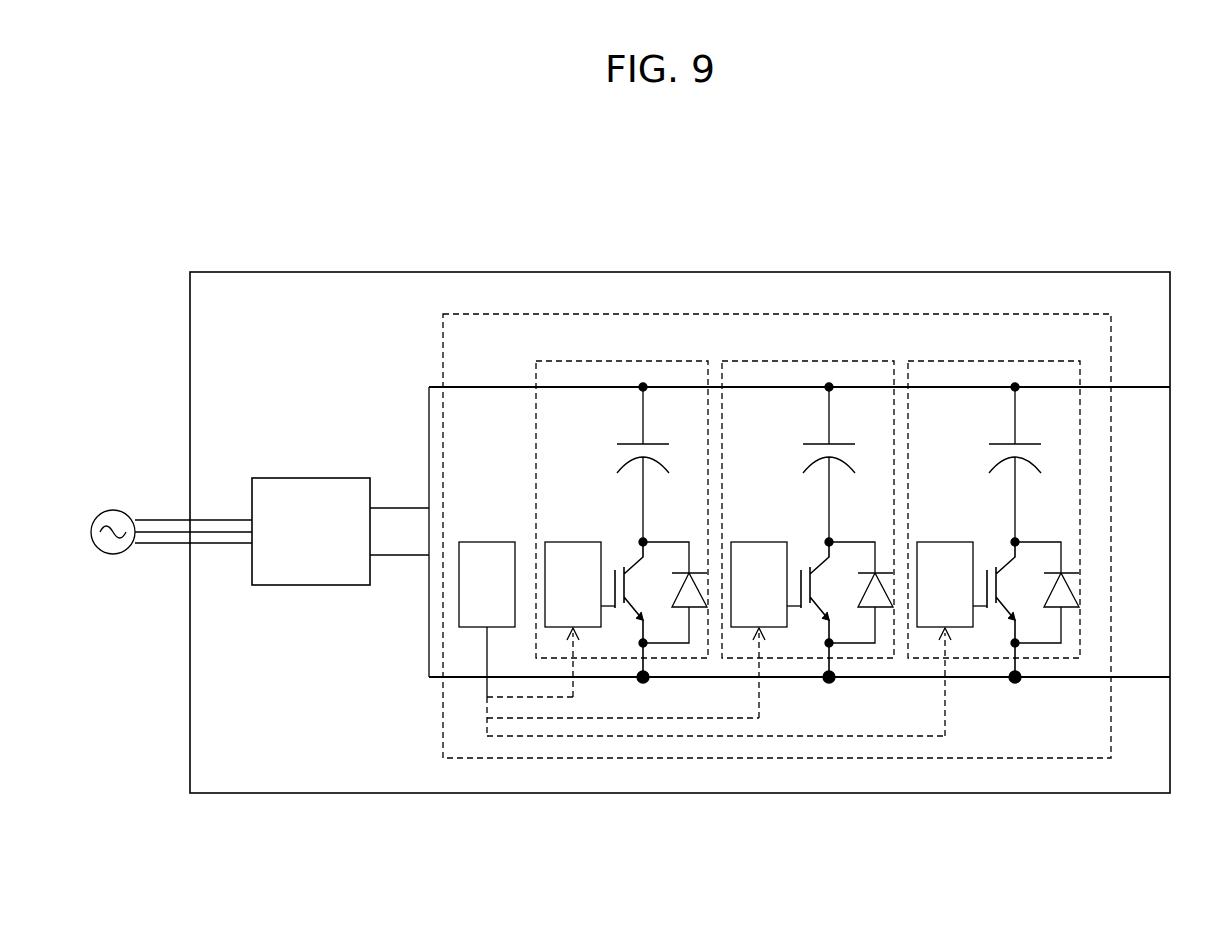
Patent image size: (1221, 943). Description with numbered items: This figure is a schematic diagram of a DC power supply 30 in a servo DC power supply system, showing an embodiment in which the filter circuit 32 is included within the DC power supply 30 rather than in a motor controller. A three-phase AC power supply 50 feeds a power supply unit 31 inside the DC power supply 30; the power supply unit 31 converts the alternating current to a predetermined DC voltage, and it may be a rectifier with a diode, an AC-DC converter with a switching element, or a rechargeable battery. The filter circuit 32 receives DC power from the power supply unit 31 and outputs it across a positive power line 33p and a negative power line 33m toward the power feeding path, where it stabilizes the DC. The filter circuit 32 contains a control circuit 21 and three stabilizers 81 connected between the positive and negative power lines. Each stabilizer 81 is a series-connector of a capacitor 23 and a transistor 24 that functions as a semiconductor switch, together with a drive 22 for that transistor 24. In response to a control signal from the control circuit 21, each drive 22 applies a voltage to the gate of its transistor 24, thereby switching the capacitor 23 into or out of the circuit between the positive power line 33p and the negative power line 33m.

The DC power supply 30 is at (1170, 300).
The filter circuit 32 is at (1112, 345).
The power supply unit 31 is at (315, 478).
The three-phase AC power supply 50 is at (107, 510).
The positive power line 33p is at (1140, 390).
The negative power line 33m is at (1143, 681).
The stabilizer 81 is at (632, 361).
The control circuit 21 is at (487, 540).
The drive 22 is at (575, 540).
The capacitor 23 is at (652, 445).
The transistor 24 is at (636, 618).